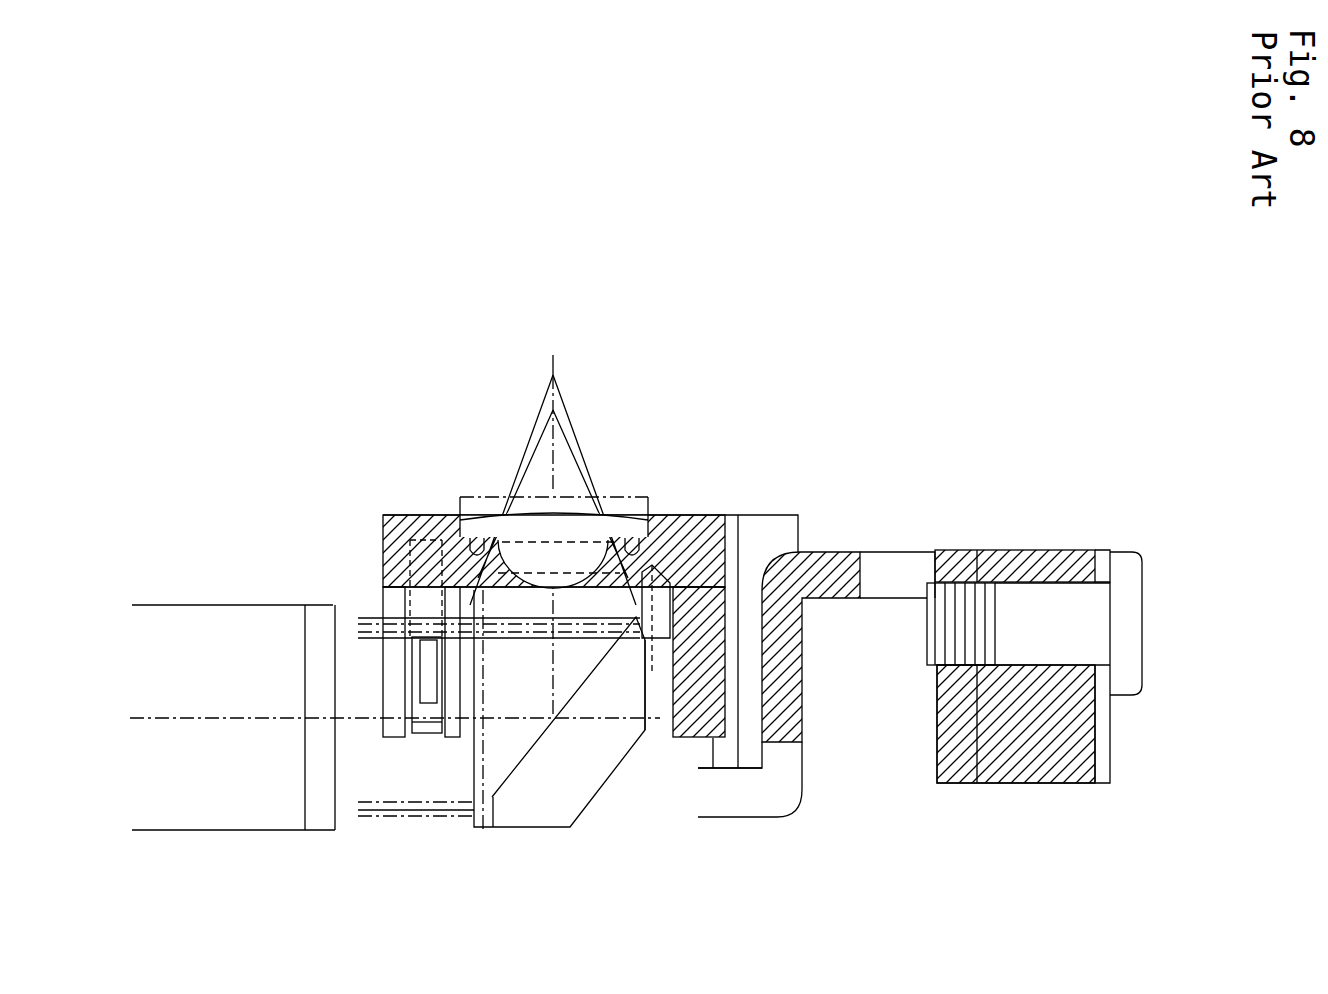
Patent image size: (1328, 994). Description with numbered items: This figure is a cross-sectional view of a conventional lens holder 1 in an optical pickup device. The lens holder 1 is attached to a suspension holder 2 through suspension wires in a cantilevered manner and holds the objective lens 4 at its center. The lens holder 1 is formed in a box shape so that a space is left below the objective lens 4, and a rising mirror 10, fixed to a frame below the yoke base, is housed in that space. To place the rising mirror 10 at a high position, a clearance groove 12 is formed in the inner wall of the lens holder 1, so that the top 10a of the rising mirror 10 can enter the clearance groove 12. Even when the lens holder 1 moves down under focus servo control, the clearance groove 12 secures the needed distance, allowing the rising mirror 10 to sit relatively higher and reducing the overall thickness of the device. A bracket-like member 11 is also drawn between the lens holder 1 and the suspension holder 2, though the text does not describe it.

The lens holder 1 is at (432, 513).
The suspension holder 2 is at (1022, 757).
The objective lens 4 is at (623, 493).
The rising mirror 10 is at (542, 805).
The top of the rising mirror 10a is at (645, 640).
The bracket 11 is at (767, 793).
The clearance groove 12 is at (660, 548).